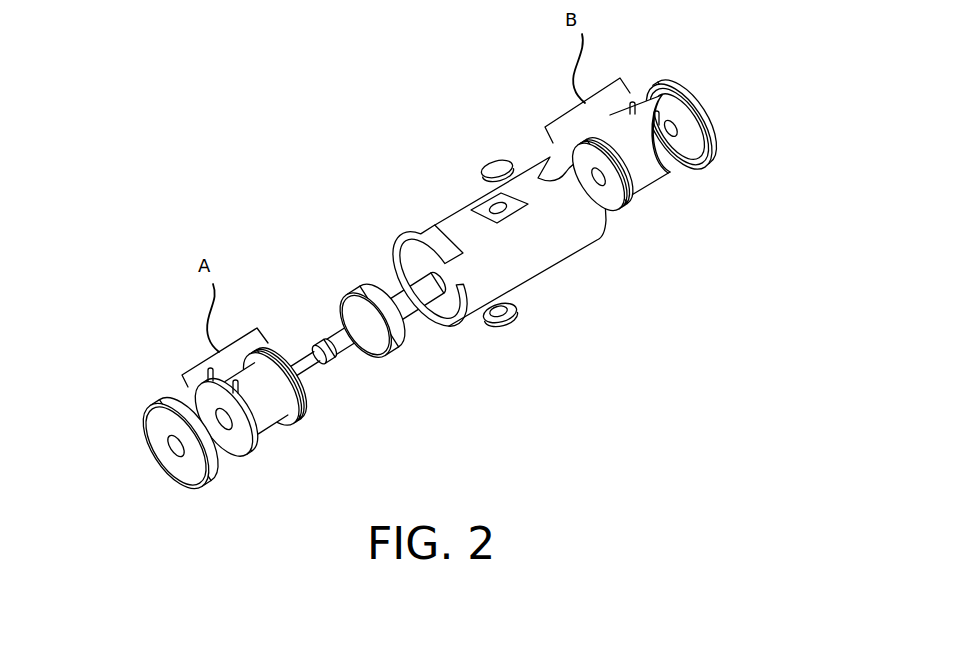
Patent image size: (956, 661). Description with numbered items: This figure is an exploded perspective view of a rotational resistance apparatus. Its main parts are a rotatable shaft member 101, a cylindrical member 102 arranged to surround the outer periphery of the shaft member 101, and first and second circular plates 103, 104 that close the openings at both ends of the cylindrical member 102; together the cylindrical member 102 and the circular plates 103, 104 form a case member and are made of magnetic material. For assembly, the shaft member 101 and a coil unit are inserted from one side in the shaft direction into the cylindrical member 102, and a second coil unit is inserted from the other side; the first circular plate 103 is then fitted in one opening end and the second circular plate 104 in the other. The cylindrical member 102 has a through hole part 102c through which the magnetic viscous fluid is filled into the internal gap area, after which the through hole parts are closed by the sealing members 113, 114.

The shaft member 101 is at (358, 291).
The cylindrical member 102 is at (437, 226).
The through hole part 102c is at (501, 212).
The first circular plate 103 is at (164, 402).
The second circular plate 104 is at (670, 82).
The sealing member 113 is at (495, 158).
The sealing member 114 is at (496, 324).